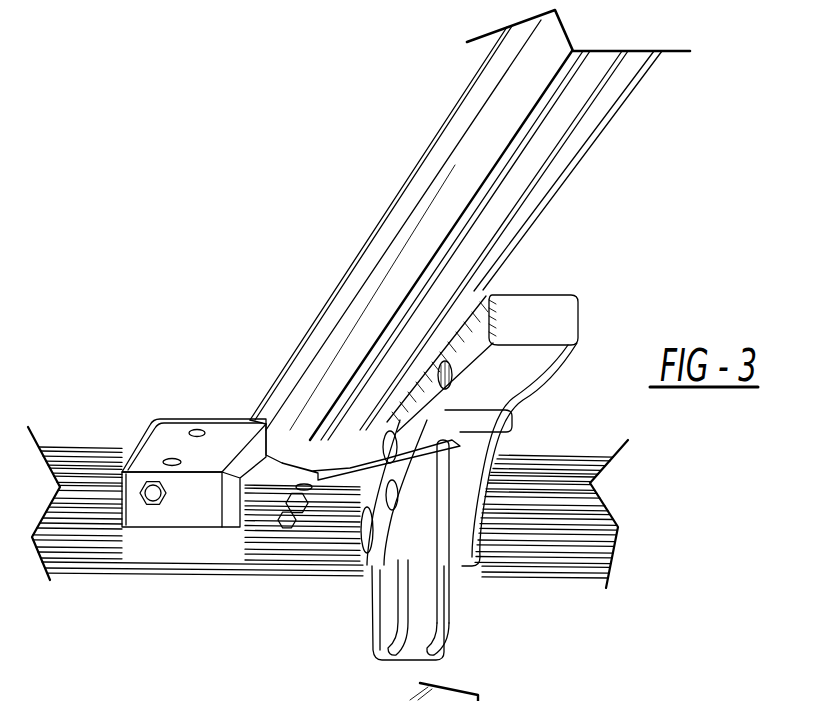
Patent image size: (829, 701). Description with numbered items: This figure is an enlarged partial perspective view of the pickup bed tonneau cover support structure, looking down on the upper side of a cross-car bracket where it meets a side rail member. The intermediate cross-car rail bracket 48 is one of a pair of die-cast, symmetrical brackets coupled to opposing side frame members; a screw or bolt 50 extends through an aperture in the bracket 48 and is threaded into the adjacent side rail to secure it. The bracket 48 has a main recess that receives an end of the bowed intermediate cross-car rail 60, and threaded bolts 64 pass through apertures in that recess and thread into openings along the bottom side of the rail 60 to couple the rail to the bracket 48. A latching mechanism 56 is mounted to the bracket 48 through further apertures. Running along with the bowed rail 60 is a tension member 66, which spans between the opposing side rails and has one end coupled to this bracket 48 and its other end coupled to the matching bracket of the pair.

The intermediate cross-car rail bracket 48 is at (195, 406).
The bolt 50 is at (160, 495).
The latching mechanism 56 is at (576, 290).
The intermediate cross-car rail 60 is at (435, 153).
The bolt 64 is at (306, 512).
The tension member 66 is at (607, 128).